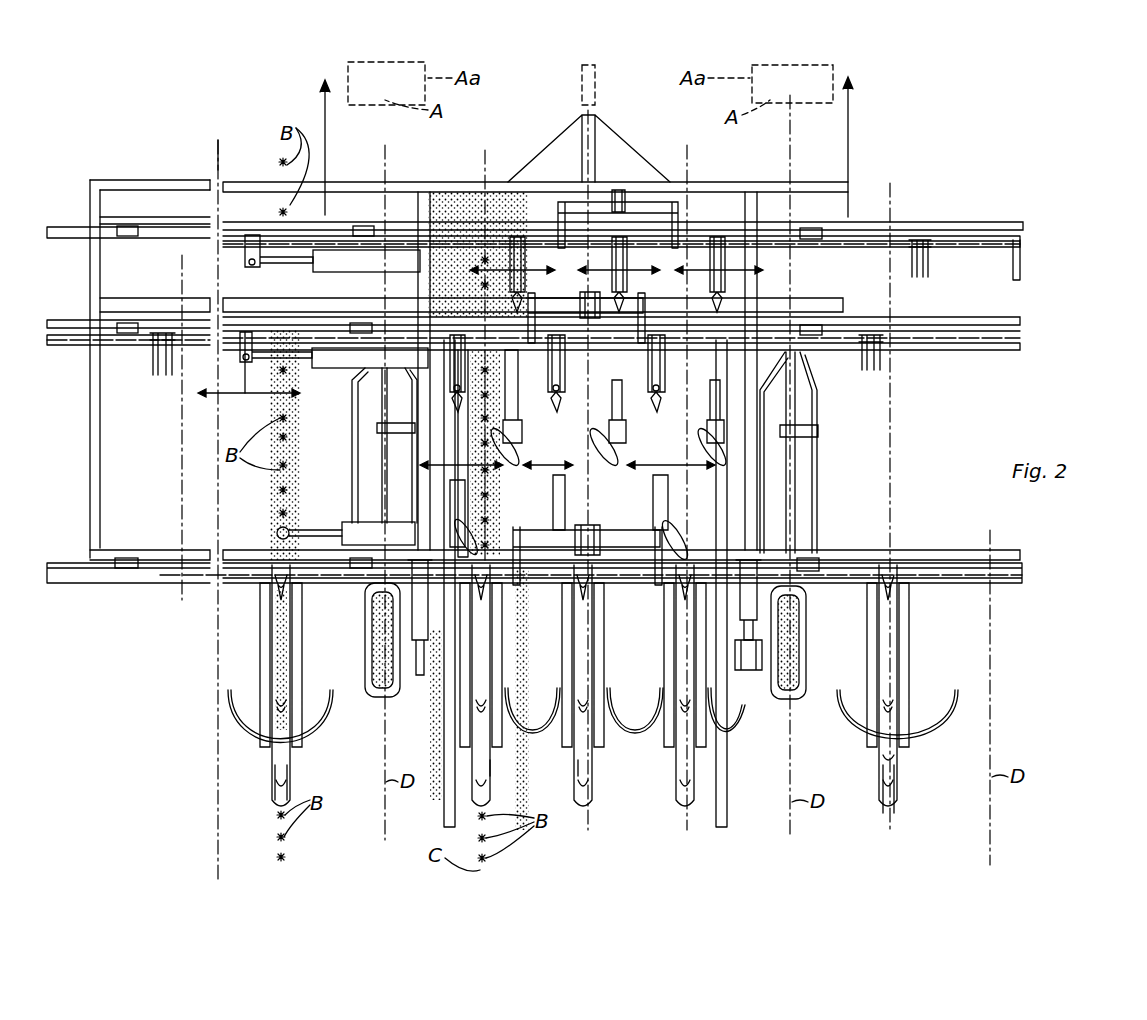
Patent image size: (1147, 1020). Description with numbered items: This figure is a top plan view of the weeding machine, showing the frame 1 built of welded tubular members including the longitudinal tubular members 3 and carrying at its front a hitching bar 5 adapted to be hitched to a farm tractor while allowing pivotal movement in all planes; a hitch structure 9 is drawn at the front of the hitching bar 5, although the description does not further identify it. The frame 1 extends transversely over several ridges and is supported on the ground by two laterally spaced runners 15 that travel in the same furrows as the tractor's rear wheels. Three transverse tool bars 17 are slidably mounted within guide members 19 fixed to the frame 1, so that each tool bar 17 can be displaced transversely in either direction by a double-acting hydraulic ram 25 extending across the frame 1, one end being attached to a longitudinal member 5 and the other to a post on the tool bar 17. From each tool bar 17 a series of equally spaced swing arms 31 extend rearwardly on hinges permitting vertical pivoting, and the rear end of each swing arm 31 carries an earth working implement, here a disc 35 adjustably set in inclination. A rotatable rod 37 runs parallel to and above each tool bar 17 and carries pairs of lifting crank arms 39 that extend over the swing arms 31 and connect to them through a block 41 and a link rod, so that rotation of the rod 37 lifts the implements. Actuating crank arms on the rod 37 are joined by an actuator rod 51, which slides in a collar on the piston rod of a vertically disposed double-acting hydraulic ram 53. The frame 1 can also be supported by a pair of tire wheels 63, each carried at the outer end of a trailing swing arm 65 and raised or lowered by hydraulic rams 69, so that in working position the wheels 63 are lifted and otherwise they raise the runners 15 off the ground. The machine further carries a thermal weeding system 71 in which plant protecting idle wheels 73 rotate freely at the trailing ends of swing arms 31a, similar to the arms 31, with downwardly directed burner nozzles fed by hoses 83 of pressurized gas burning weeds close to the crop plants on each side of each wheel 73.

The frame 1 is at (250, 155).
The longitudinal tubular members 3 is at (90, 470).
The hitching bar 5 is at (725, 185).
The hitch mast 9 is at (585, 150).
The runners 15 is at (352, 410).
The tool bar 17 is at (52, 240).
The guide members 19 is at (128, 237).
The double-acting hydraulic cylinder and piston unit (ram) 25 is at (333, 252).
The swing arm 31 is at (462, 427).
The swing arm 31a is at (300, 655).
The disc 35 is at (515, 447).
The rotatable rod 37 is at (865, 250).
The lifting crank arms 39 is at (155, 355).
The block 41 is at (568, 772).
The actuator rod 51 is at (577, 202).
The vertically disposed double-acting hydraulic ram 53 is at (625, 196).
The ground engaging tire wheels 63 is at (380, 698).
The trailing swing arm 65 is at (750, 670).
The hydraulic rams 69 is at (410, 595).
The thermal weeding system 71 is at (303, 772).
The plant protecting idle wheels 73 is at (885, 764).
The hoses 83 is at (230, 705).